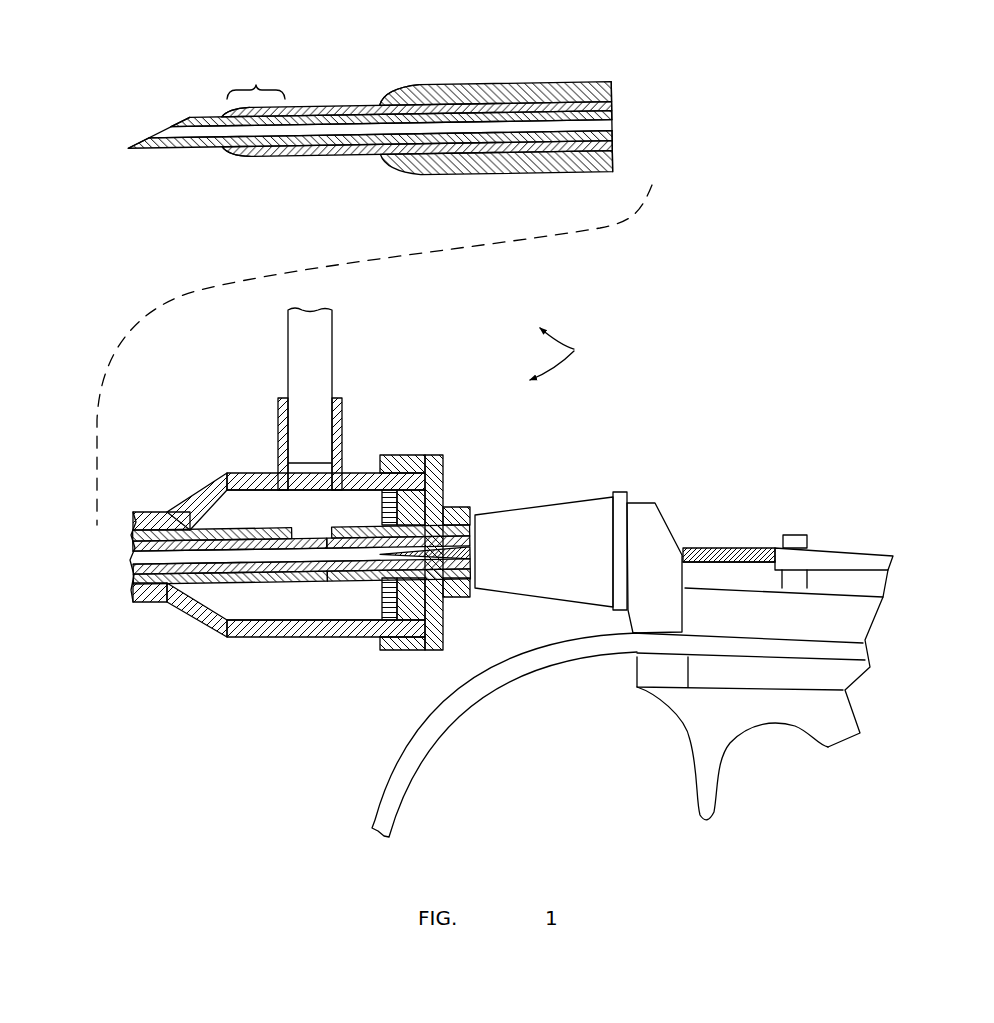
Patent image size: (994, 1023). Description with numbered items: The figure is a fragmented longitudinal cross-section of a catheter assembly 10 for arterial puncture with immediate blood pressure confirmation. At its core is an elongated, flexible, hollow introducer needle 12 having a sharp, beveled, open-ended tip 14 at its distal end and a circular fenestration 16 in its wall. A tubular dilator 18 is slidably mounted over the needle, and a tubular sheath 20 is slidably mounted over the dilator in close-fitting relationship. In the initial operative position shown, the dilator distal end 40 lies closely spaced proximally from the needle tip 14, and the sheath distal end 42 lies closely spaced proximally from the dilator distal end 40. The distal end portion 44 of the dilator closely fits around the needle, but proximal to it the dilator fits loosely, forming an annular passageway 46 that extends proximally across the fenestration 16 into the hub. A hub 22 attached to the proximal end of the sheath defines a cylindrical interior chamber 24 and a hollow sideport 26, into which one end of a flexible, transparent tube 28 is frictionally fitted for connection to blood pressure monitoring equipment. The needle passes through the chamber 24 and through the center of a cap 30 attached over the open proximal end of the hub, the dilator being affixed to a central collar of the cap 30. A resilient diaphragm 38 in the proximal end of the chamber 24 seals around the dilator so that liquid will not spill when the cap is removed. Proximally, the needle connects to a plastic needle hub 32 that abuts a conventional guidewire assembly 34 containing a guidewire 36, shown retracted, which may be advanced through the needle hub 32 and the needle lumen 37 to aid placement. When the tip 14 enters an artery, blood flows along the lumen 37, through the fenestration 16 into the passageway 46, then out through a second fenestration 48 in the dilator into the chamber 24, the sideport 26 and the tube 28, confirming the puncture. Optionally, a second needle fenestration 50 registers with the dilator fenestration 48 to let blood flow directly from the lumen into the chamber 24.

The catheter assembly 10 is at (571, 354).
The introducer needle 12 is at (190, 145).
The beveled tip 14 is at (172, 128).
The fenestration 16 is at (508, 118).
The dilator 18 is at (325, 106).
The sheath 20 is at (455, 84).
The hub 22 is at (240, 473).
The interior chamber 24 is at (270, 521).
The sideport 26 is at (343, 428).
The tube 28 is at (333, 360).
The cap 30 is at (447, 482).
The needle hub 32 is at (537, 513).
The guidewire assembly 34 is at (673, 530).
The guidewire 36 is at (380, 551).
The lumen 37 is at (257, 126).
The diaphragm 38 is at (377, 597).
The dilator distal end 40 is at (224, 115).
The sheath distal end 42 is at (379, 102).
The dilator distal end portion 44 is at (256, 79).
The passageway 46 is at (608, 142).
The dilator fenestration 48 is at (292, 537).
The second needle fenestration 50 is at (327, 547).